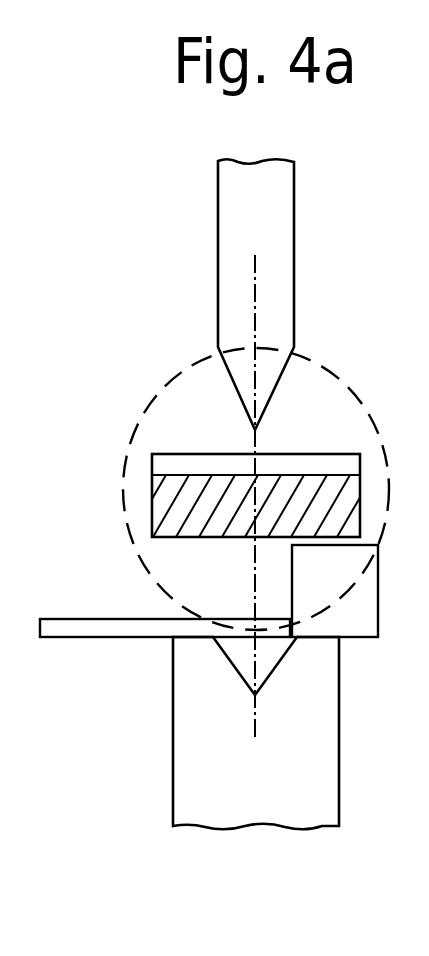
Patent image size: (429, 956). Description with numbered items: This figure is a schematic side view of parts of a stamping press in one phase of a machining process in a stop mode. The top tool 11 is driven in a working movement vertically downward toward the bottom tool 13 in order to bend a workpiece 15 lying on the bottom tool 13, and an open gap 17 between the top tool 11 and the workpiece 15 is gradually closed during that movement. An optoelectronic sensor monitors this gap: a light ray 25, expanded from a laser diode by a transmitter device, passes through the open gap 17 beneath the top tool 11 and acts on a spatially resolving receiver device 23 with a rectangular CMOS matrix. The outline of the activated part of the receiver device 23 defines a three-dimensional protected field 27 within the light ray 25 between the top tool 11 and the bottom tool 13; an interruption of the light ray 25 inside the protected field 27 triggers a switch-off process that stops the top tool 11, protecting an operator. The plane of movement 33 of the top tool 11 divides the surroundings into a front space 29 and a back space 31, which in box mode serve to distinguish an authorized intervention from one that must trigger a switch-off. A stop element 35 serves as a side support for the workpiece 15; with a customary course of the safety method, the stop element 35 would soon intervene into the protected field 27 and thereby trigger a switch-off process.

The top tool 11 is at (224, 262).
The bottom tool 13 is at (195, 758).
The workpiece 15 is at (101, 628).
The open gap 17 is at (192, 556).
The receiver device 23 is at (233, 460).
The light ray 25 is at (180, 373).
The protected field 27 is at (166, 491).
The front space 29 is at (156, 203).
The back space 31 is at (386, 203).
The plane of movement 33 is at (256, 268).
The stop element 35 is at (375, 588).